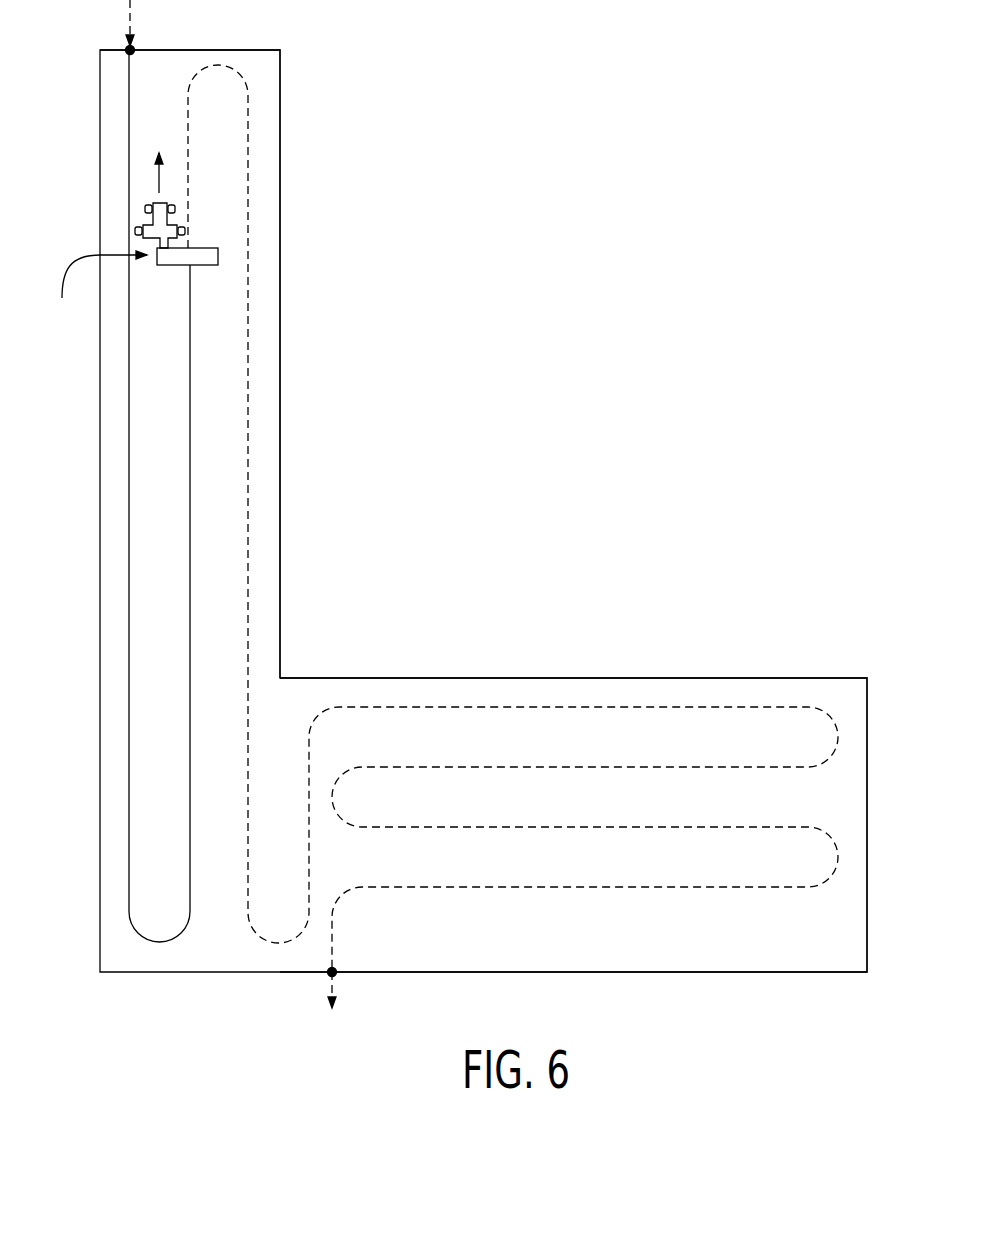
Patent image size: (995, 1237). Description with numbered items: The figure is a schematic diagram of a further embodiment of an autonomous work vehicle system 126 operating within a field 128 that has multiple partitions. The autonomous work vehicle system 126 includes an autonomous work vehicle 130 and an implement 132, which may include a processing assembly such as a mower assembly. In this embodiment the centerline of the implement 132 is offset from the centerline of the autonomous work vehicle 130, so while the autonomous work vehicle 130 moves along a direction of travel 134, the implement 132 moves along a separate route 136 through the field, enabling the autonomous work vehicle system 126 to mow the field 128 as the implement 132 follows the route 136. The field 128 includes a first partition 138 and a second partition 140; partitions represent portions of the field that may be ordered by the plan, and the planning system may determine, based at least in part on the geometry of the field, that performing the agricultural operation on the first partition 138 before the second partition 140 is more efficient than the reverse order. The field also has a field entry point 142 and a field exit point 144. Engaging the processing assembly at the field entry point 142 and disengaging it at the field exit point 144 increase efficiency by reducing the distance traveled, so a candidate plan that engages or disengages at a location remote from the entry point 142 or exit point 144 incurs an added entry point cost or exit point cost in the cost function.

The autonomous work vehicle system 126 is at (95, 291).
The field 128 is at (342, 460).
The autonomous work vehicle 130 is at (150, 228).
The implement 132 is at (178, 258).
The direction of travel 134 is at (157, 190).
The route 136 is at (190, 407).
The first partition 138 is at (123, 508).
The second partition 140 is at (573, 665).
The field entry point 142 is at (127, 46).
The field exit point 144 is at (330, 975).